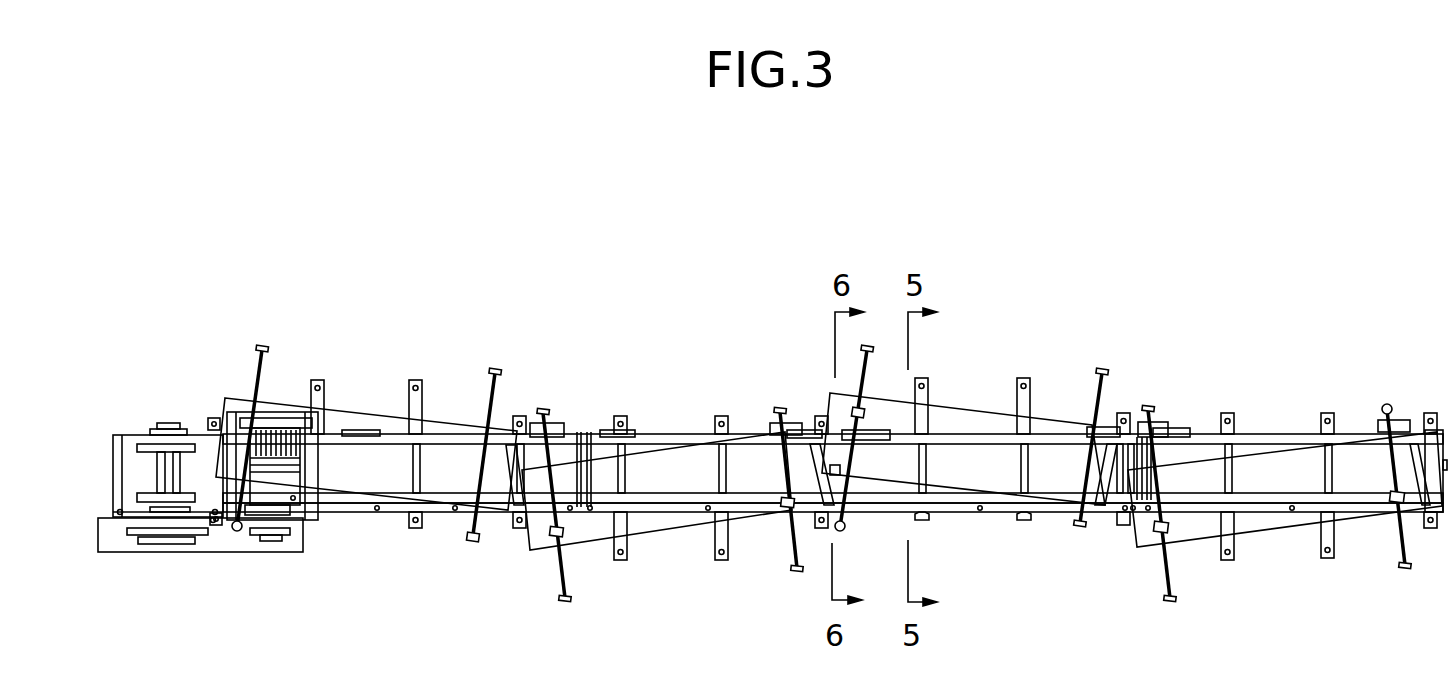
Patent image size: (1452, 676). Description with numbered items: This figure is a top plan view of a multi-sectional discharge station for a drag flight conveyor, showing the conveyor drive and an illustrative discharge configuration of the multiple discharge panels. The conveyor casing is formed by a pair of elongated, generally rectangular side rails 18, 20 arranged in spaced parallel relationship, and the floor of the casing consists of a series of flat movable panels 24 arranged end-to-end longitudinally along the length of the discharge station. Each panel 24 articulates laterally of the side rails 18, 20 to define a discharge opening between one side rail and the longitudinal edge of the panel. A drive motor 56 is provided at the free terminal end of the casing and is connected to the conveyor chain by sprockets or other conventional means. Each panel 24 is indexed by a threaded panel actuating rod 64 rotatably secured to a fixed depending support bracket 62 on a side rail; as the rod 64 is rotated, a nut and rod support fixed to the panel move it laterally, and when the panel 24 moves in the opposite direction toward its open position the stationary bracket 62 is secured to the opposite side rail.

The side rail 18 is at (998, 514).
The side rail 20 is at (1258, 432).
The movable panel 24 is at (238, 397).
The drive motor 56 is at (275, 408).
The support bracket 62 is at (569, 421).
The panel actuating rod 64 is at (492, 412).